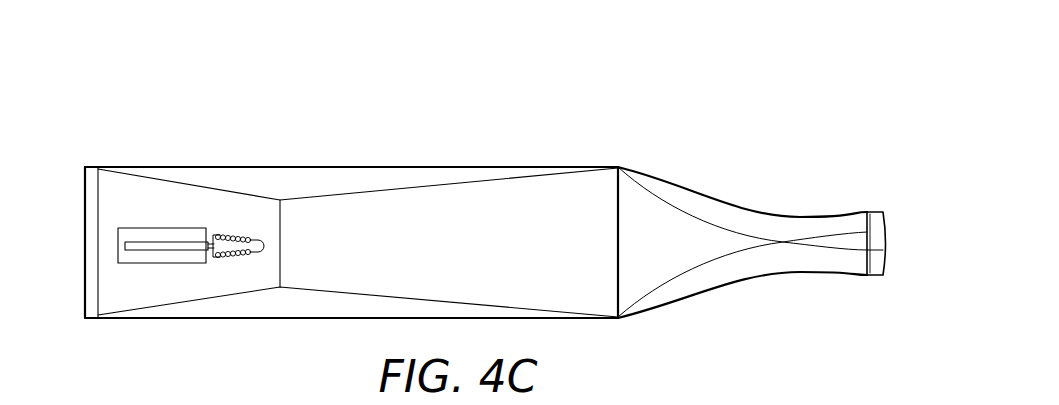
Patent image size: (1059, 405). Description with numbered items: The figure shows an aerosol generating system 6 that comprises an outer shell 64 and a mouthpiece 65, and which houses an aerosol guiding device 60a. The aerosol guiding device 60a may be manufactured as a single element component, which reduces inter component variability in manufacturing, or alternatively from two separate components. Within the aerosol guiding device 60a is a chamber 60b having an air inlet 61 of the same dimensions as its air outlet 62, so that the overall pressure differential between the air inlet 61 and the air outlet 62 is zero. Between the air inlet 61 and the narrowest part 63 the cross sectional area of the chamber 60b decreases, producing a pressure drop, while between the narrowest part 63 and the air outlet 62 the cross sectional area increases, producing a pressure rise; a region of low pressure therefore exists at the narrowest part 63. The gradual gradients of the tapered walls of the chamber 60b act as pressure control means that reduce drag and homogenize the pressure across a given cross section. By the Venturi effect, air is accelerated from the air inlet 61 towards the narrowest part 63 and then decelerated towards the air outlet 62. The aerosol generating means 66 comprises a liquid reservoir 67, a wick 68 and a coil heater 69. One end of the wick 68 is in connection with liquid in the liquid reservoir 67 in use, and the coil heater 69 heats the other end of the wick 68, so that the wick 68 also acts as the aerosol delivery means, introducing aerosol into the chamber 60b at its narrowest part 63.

The aerosol generating system 6 is at (757, 110).
The aerosol guiding device 60a is at (338, 190).
The chamber 60b is at (343, 293).
The air inlet 61 is at (98, 230).
The air outlet 62 is at (618, 290).
The narrowest part 63 is at (280, 287).
The outer shell 64 is at (552, 164).
The mouthpiece 65 is at (820, 215).
The aerosol generating means 66 is at (189, 244).
The liquid reservoir 67 is at (127, 237).
The wick 68 is at (185, 247).
The coil heater 69 is at (223, 232).